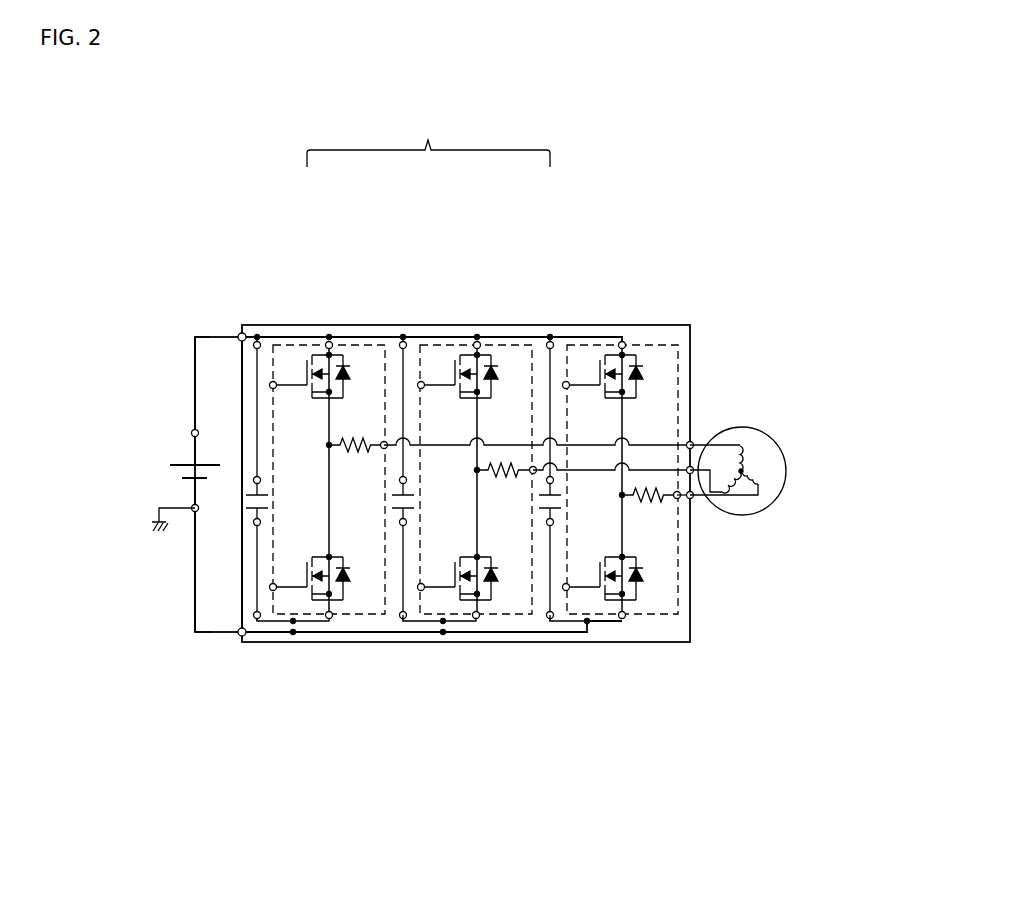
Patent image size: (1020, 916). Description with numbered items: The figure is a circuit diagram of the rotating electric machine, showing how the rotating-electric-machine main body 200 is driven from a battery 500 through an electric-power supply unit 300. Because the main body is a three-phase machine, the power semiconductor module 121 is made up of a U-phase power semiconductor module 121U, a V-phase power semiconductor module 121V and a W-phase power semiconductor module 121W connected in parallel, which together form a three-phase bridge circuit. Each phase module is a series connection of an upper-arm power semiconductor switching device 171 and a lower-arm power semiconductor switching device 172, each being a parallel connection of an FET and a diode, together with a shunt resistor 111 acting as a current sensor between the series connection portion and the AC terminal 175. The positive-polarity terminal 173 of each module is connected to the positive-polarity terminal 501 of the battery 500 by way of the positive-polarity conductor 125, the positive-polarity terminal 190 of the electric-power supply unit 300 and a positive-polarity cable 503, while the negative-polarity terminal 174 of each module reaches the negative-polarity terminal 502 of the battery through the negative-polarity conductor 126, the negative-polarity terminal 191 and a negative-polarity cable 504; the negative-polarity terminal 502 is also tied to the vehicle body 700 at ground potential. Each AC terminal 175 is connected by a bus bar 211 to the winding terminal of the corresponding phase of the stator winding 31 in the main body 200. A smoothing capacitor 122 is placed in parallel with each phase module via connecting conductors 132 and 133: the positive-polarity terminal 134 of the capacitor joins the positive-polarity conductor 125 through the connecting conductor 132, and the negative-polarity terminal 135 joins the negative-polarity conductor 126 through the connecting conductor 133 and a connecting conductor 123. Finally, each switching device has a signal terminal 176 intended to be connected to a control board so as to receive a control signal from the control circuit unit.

The stator winding 31 is at (742, 468).
The shunt resistor 111 is at (362, 440).
The power semiconductor module 121 is at (448, 129).
The U-phase power semiconductor module 121U is at (350, 345).
The V-phase power semiconductor module 121V is at (462, 336).
The W-phase power semiconductor module 121W is at (595, 350).
The smoothing capacitor 122 is at (267, 502).
The connecting conductor 123 is at (452, 622).
The positive-polarity conductor 125 is at (410, 336).
The negative-polarity conductor 126 is at (405, 633).
The connecting conductor 132 is at (552, 367).
The connecting conductor 133 is at (553, 606).
The positive-polarity terminal 134 is at (548, 476).
The negative-polarity terminal 135 is at (548, 528).
The upper-arm power semiconductor switching device 171 is at (300, 355).
The lower-arm power semiconductor switching device 172 is at (318, 603).
The positive-polarity terminal 173 is at (327, 336).
The negative-polarity terminal 174 is at (330, 615).
The AC terminal 175 is at (384, 449).
The signal terminal 176 is at (270, 614).
The positive-polarity terminal 190 is at (238, 334).
The negative-polarity terminal 191 is at (240, 636).
The rotating-electric-machine main body 200 is at (762, 415).
The bus bar 211 is at (658, 445).
The electric-power supply unit 300 is at (622, 347).
The battery 500 is at (170, 482).
The positive-polarity terminal 501 is at (194, 430).
The negative-polarity terminal 502 is at (193, 512).
The positive-polarity cable 503 is at (198, 335).
The negative-polarity cable 504 is at (202, 635).
The vehicle body 700 is at (153, 516).